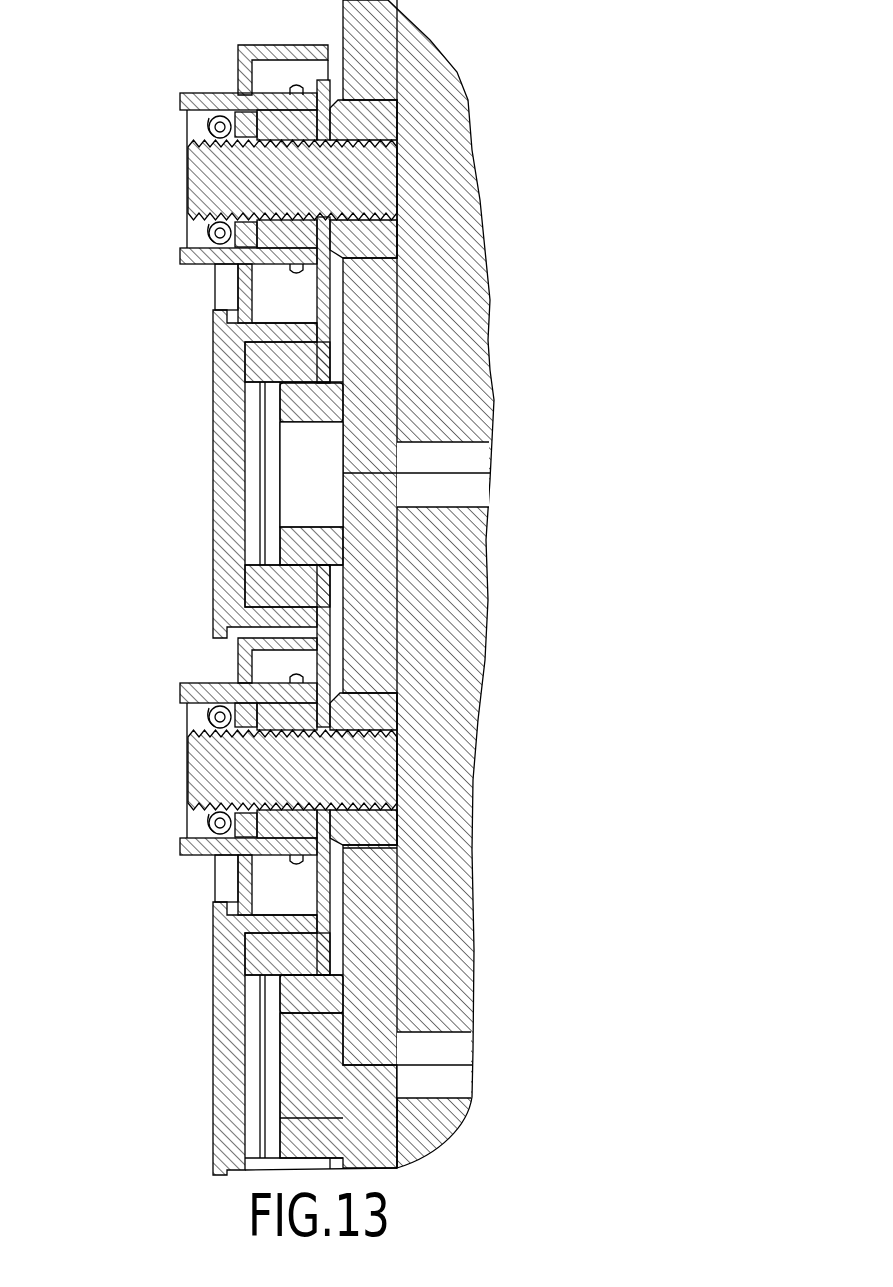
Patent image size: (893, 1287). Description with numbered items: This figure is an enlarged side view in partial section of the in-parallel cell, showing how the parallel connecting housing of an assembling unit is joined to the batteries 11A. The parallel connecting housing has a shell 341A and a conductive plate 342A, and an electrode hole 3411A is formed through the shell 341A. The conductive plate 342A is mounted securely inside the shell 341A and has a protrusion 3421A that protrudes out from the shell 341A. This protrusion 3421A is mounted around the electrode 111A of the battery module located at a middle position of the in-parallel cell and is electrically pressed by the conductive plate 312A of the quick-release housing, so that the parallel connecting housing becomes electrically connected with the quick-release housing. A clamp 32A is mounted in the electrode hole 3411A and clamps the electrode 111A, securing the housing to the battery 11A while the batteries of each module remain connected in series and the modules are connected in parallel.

The battery 11A is at (463, 181).
The clamp 32A is at (155, 163).
The electrode 111A is at (187, 198).
The conductive plate of the quick-release housing 312A is at (312, 710).
The shell 341A is at (193, 365).
The conductive plate 342A is at (238, 473).
The electrode hole 3411A is at (238, 92).
The protrusion 3421A is at (323, 862).